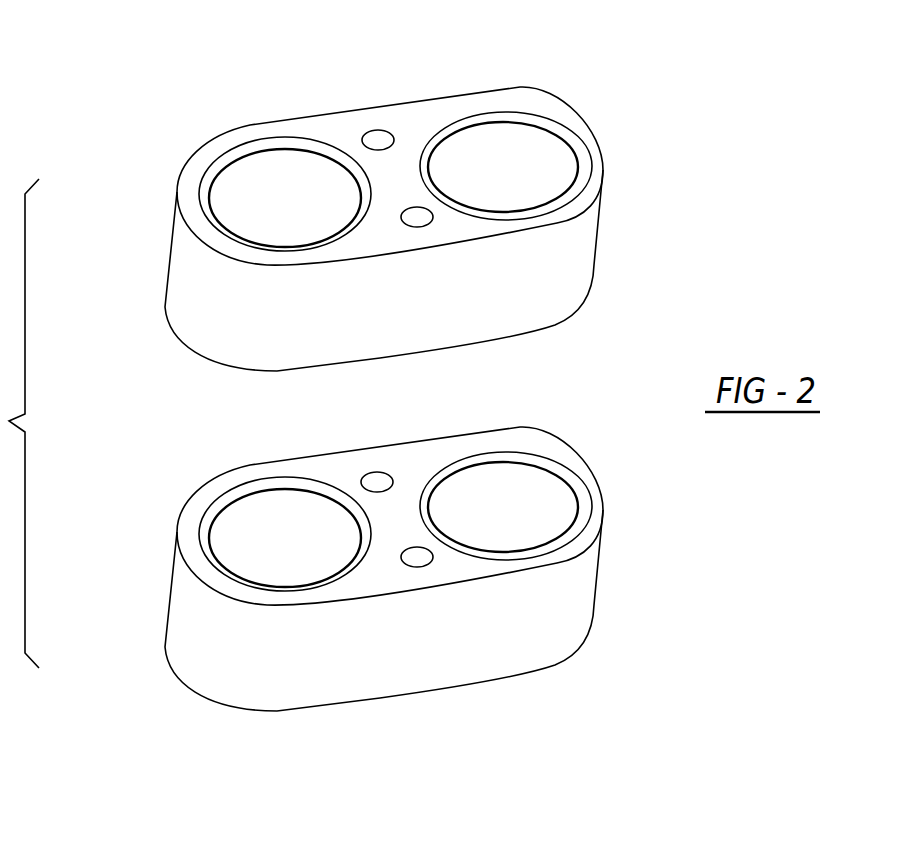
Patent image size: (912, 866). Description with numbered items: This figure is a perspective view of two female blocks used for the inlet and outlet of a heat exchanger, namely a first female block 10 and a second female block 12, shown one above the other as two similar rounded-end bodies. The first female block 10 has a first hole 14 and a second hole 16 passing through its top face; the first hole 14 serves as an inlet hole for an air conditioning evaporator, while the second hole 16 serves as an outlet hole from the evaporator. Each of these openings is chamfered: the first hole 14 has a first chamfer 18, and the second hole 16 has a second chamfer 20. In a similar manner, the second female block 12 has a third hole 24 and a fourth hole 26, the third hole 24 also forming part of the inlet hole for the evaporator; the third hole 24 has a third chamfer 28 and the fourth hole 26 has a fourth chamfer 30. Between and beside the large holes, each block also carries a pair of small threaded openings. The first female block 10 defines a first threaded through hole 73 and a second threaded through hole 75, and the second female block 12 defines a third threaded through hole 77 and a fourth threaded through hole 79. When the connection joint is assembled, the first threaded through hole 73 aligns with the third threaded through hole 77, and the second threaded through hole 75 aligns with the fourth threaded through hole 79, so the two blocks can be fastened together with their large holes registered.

The first female block 10 is at (630, 288).
The second female block 12 is at (152, 676).
The first hole 14 is at (460, 130).
The second hole 16 is at (227, 167).
The first chamfer 18 is at (500, 120).
The second chamfer 20 is at (338, 162).
The third hole 24 is at (547, 480).
The fourth hole 26 is at (215, 514).
The third chamfer 28 is at (458, 467).
The fourth chamfer 30 is at (284, 483).
The first threaded through hole 73 is at (419, 228).
The second threaded through hole 75 is at (383, 130).
The third threaded through hole 77 is at (417, 567).
The fourth threaded through hole 79 is at (378, 472).